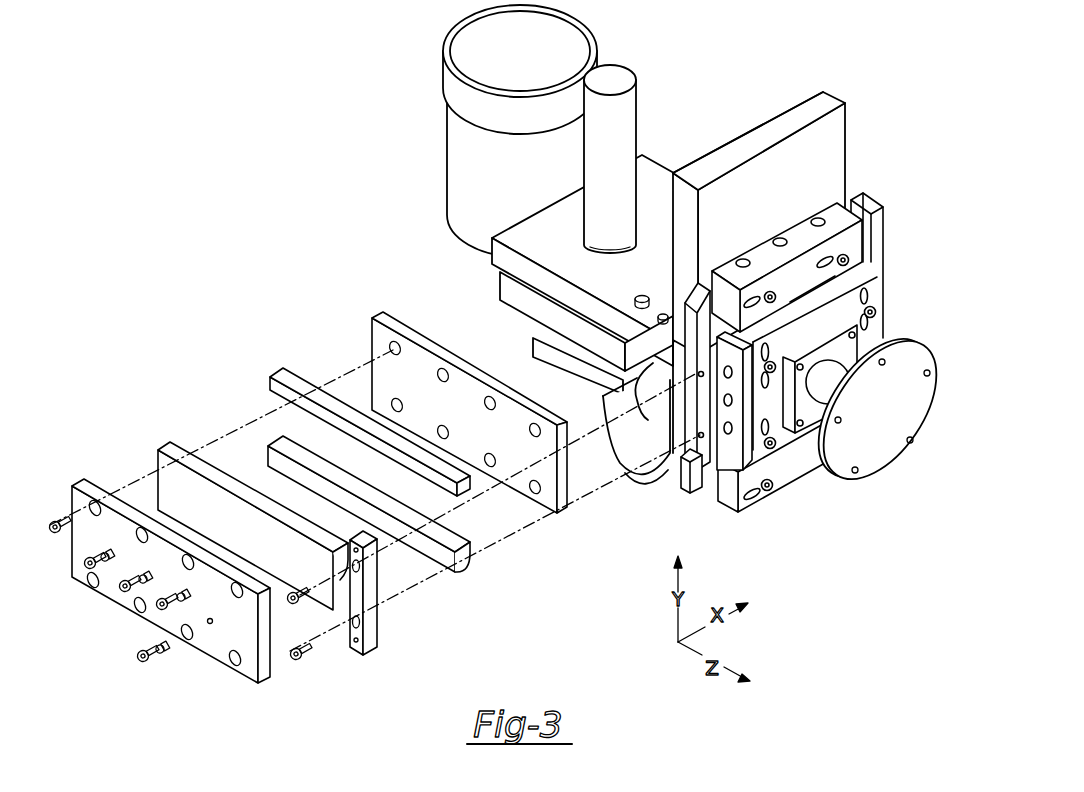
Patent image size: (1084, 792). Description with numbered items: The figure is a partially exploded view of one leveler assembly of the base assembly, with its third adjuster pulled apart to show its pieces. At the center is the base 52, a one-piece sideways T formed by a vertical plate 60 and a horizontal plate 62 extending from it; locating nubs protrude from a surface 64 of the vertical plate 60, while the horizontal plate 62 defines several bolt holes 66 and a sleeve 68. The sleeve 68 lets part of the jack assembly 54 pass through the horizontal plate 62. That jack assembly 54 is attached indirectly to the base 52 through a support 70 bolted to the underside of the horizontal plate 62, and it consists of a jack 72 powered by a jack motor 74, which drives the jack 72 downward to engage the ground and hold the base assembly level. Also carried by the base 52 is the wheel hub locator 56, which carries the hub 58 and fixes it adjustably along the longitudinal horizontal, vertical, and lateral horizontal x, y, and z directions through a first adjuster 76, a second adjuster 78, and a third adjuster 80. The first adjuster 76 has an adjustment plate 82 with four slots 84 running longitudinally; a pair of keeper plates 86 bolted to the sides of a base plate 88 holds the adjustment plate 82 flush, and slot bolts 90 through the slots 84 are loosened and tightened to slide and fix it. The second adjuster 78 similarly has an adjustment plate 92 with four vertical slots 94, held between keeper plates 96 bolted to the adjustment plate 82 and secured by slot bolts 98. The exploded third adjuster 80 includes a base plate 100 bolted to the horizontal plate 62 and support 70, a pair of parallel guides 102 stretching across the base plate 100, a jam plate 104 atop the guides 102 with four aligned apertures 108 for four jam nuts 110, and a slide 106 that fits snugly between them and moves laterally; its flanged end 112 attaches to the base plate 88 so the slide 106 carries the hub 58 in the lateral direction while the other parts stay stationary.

The base 52 is at (803, 264).
The jack assembly 54 is at (476, 131).
The wheel hub locator 56 is at (795, 381).
The hub 58 is at (905, 455).
The vertical plate 60 is at (838, 130).
The horizontal plate 62 is at (640, 168).
The surface 64 is at (787, 112).
The bolt holes 66 is at (664, 316).
The sleeve 68 is at (612, 250).
The support 70 is at (515, 247).
The jack 72 is at (617, 416).
The jack motor 74 is at (460, 144).
The first adjuster 76 is at (825, 381).
The second adjuster 78 is at (881, 331).
The third adjuster 80 is at (307, 534).
The adjustment plate 82 is at (857, 262).
The slots 84 is at (833, 256).
The keeper plates 86 is at (805, 225).
The base plate 88 is at (700, 488).
The slot bolts 90 is at (840, 250).
The adjustment plate 92 is at (833, 382).
The slots 94 is at (766, 350).
The keeper plates 96 is at (706, 425).
The slot bolts 98 is at (855, 322).
The base plate 100 is at (460, 415).
The guides 102 is at (270, 460).
The jam plate 104 is at (163, 570).
The slide 106 is at (177, 485).
The apertures 108 is at (213, 626).
The jam nuts 110 is at (110, 550).
The flanged end 112 is at (345, 594).